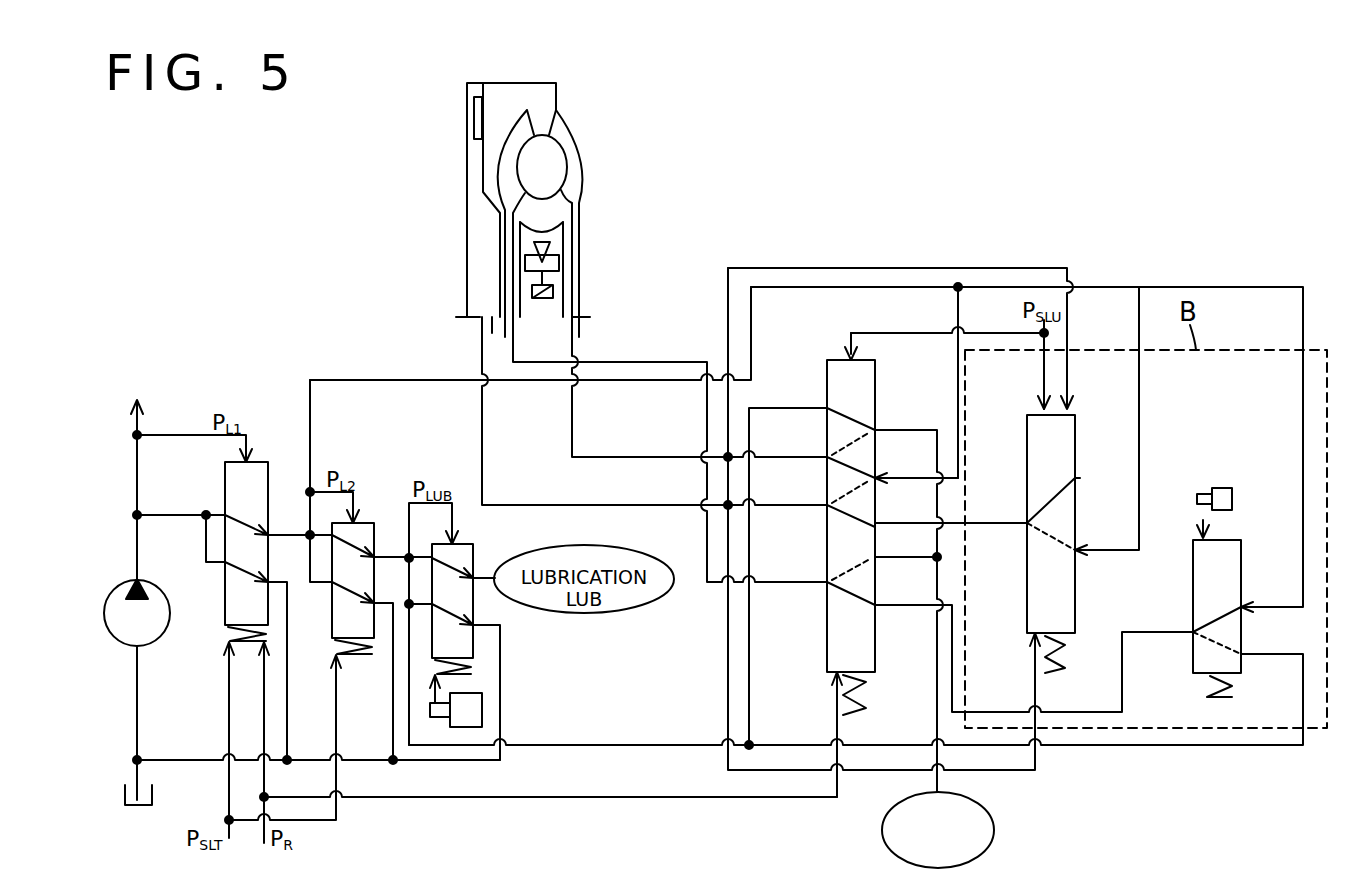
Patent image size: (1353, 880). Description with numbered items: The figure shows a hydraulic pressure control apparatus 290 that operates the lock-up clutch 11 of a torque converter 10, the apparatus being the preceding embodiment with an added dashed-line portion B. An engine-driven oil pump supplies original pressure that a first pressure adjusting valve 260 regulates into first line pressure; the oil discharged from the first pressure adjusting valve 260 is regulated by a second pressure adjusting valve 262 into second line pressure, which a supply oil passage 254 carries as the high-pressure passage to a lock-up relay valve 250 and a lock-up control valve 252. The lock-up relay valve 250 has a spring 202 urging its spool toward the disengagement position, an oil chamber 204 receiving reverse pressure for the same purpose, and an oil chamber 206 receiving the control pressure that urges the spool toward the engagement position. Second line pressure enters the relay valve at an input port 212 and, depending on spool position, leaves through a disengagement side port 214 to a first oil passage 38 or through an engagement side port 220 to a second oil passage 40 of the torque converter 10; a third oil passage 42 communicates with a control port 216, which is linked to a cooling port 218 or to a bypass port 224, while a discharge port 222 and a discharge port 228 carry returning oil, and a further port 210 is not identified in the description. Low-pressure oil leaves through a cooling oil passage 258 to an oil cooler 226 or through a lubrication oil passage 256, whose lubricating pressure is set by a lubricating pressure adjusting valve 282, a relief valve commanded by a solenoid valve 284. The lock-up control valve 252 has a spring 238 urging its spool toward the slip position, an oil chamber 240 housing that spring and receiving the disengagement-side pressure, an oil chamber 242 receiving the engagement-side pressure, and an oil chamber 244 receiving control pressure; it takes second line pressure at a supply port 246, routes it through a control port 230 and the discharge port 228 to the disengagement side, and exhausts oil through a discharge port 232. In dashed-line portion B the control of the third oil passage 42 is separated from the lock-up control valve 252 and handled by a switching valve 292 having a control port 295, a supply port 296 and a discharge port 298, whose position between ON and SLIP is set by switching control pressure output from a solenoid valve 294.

The torque converter 10 is at (579, 83).
The lock-up clutch 11 is at (478, 115).
The first oil passage 38 is at (492, 333).
The second oil passage 40 is at (578, 326).
The third oil passage 42 is at (484, 340).
The spring 202 is at (866, 700).
The oil chamber 204 is at (834, 677).
The oil chamber 206 is at (851, 354).
The input port 210 is at (827, 405).
The input port 212 is at (877, 478).
The disengagement side port 214 is at (827, 503).
The control port 216 is at (827, 580).
The cooling port 218 is at (877, 558).
The engagement side port 220 is at (827, 455).
The discharge port 222 is at (877, 430).
The bypass port 224 is at (877, 606).
The oil cooler 226 is at (884, 835).
The discharge port 228 is at (877, 523).
The control port 230 is at (1027, 522).
The discharge port 232 is at (1078, 478).
The spring 238 is at (1062, 672).
The oil chamber 240 is at (1030, 640).
The oil chamber 242 is at (1072, 412).
The oil chamber 244 is at (1040, 412).
The supply port 246 is at (1080, 548).
The lock-up relay valve 250 is at (852, 246).
The lock-up control valve 252 is at (1091, 253).
The supply oil passage 254 is at (672, 381).
The lubrication oil passage 256 is at (556, 747).
The cooling oil passage 258 is at (942, 776).
The first pressure adjusting valve 260 is at (188, 376).
The second pressure adjusting valve 262 is at (346, 446).
The lubricating pressure adjusting valve 282 is at (432, 474).
The solenoid valve 284 is at (483, 705).
The hydraulic pressure control apparatus 290 is at (831, 111).
The switching valve 292 is at (1215, 530).
The solenoid valve 294 is at (1225, 488).
The control port 295 is at (1190, 632).
The supply port 296 is at (1243, 606).
The discharge port 298 is at (1243, 653).